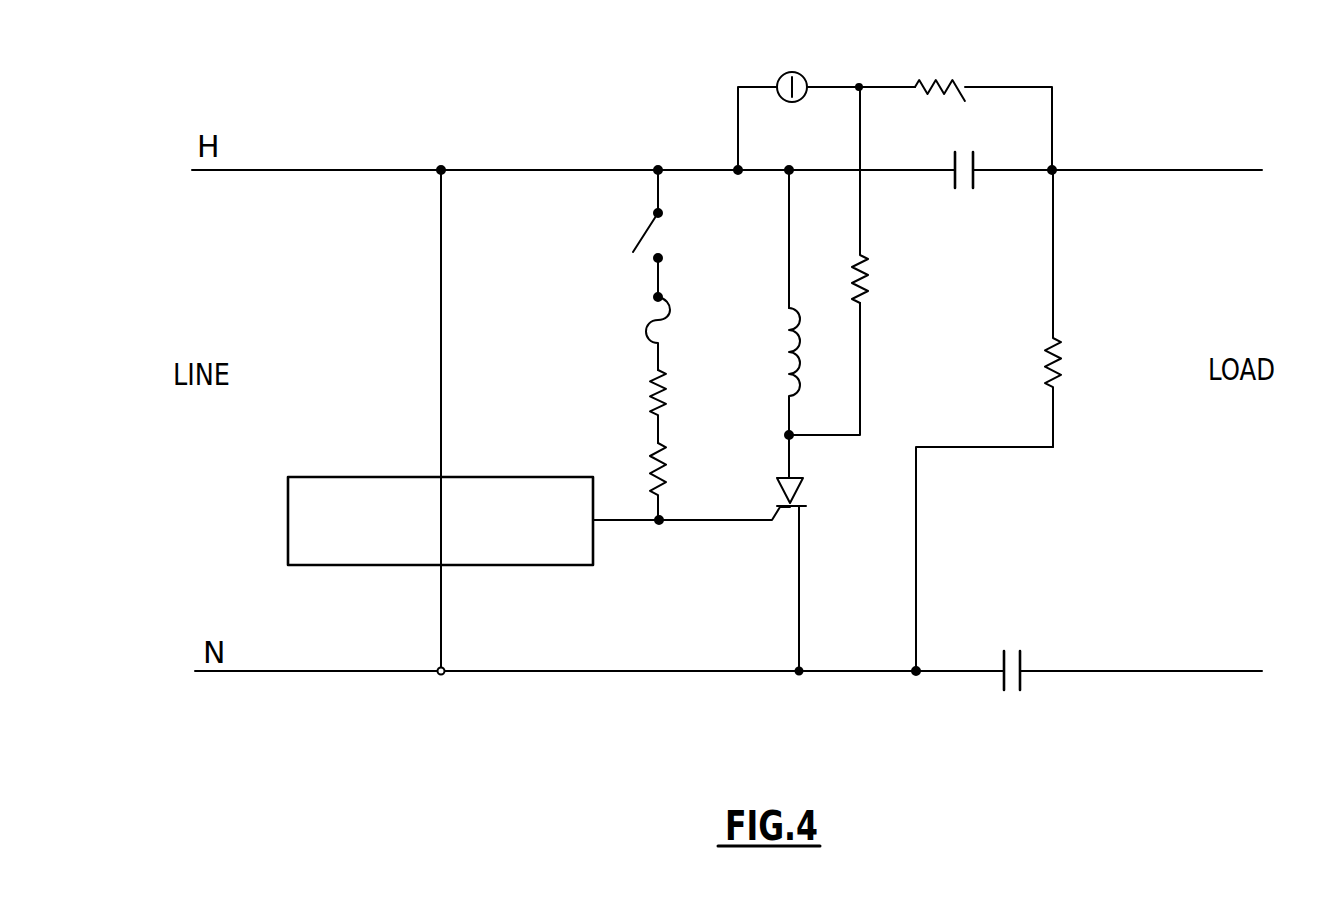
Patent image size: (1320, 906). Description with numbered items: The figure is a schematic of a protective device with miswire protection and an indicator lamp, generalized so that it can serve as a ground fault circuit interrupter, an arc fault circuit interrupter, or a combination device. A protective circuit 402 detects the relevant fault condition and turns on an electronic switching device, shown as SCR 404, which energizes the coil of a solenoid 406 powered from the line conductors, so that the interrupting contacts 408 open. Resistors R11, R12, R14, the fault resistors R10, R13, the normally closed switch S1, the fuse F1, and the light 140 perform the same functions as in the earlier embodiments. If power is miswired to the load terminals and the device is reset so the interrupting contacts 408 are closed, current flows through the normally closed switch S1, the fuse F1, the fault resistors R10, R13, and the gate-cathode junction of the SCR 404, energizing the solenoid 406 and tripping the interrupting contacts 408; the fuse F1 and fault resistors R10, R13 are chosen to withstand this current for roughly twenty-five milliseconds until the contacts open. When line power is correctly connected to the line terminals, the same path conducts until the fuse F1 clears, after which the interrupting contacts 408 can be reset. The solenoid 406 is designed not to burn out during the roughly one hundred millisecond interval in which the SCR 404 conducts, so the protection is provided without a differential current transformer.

The light 140 is at (802, 76).
The protective circuit 402 is at (343, 477).
The SCR 404 is at (806, 500).
The solenoid 406 is at (791, 325).
The interrupting contacts 408 is at (972, 190).
The normally closed switch S1 is at (628, 231).
The fuse F1 is at (675, 331).
The fault resistor R10 is at (690, 406).
The resistor R11 is at (1085, 308).
The resistor R12 is at (940, 74).
The fault resistor R13 is at (690, 481).
The resistor R14 is at (893, 195).